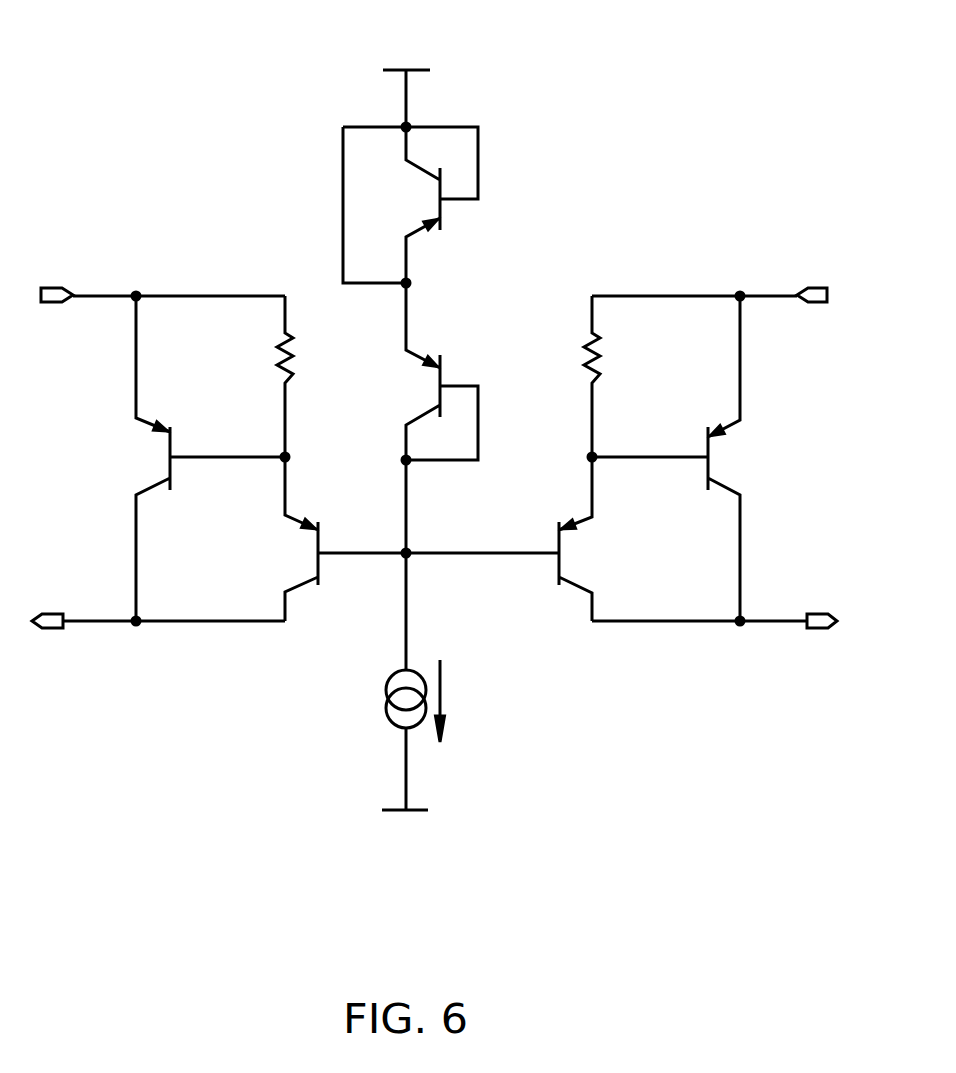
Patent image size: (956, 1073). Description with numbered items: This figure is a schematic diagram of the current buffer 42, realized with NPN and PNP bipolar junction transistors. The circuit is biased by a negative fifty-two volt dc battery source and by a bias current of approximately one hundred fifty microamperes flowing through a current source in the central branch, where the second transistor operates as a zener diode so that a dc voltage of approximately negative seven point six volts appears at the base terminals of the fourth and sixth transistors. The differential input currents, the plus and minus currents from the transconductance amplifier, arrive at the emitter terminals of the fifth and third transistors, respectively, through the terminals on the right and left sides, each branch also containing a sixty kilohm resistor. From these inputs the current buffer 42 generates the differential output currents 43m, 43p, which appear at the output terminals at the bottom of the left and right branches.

The current buffer 42 is at (455, 490).
The differential output current 43m is at (97, 622).
The differential output current 43p is at (687, 622).